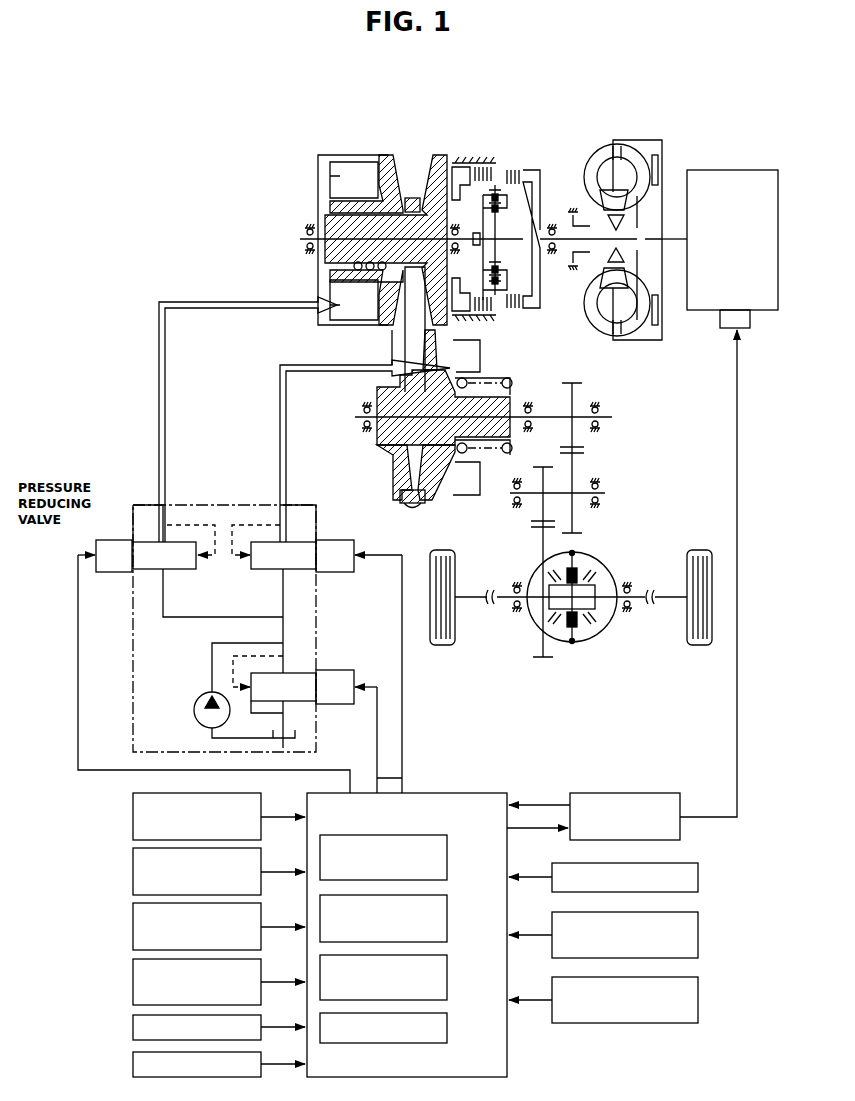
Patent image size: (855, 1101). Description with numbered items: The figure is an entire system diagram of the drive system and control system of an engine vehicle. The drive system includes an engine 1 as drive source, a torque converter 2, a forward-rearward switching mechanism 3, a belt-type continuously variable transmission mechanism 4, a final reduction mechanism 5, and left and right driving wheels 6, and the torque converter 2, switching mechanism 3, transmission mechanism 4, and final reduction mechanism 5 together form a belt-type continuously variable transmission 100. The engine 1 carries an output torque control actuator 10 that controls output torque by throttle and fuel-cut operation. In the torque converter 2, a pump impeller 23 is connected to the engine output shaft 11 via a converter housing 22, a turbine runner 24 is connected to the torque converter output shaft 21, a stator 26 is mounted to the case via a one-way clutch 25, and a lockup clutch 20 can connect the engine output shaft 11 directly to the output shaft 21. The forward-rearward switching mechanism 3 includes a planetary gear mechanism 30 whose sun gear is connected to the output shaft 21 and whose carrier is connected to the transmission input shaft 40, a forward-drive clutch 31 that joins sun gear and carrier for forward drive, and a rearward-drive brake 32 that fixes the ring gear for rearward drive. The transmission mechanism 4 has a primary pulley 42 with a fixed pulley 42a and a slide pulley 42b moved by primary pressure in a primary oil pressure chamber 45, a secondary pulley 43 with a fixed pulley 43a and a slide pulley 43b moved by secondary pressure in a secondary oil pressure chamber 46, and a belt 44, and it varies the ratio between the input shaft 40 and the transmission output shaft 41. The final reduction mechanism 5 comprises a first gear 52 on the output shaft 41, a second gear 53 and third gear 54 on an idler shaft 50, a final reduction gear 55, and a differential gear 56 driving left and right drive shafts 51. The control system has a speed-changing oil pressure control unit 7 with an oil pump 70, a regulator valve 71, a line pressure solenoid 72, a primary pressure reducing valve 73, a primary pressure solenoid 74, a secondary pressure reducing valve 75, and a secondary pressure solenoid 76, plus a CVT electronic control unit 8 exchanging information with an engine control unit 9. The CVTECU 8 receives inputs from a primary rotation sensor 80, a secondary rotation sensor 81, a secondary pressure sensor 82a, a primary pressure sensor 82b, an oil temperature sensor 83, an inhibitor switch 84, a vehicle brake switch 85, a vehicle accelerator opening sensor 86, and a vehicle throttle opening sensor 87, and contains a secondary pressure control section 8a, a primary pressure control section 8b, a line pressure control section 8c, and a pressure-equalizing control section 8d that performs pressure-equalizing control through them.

The engine 1 is at (737, 170).
The torque converter 2 is at (628, 227).
The forward-rearward switching mechanism 3 is at (496, 226).
The belt-type continuously variable transmission mechanism 4 is at (364, 214).
The final reduction mechanism 5 is at (571, 530).
The driving wheels 6 is at (442, 646).
The speed-changing oil pressure control unit 7 is at (240, 616).
The CVT electronic control unit 8 is at (407, 914).
The engine control unit 9 is at (626, 793).
The output torque control actuator 10 is at (752, 328).
The engine output shaft 11 is at (670, 250).
The lockup clutch 20 is at (662, 172).
The torque converter output shaft 21 is at (565, 255).
The converter housing 22 is at (647, 140).
The pump impeller 23 is at (596, 152).
The turbine runner 24 is at (628, 338).
The one-way clutch 25 is at (592, 214).
The stator 26 is at (615, 186).
The planetary gear mechanism 30 is at (500, 300).
The forward-drive clutch 31 is at (521, 170).
The rearward-drive brake 32 is at (478, 162).
The transmission input shaft 40 is at (330, 217).
The transmission output shaft 41 is at (541, 413).
The primary pulley 42 is at (313, 178).
The fixed pulley 42a is at (438, 153).
The slide pulley 42b is at (394, 153).
The secondary pulley 43 is at (466, 436).
The fixed pulley 43a is at (395, 482).
The slide pulley 43b is at (418, 505).
The belt 44 is at (396, 350).
The primary oil pressure chamber 45 is at (368, 148).
The secondary oil pressure chamber 46 is at (457, 498).
The idler shaft 50 is at (580, 500).
The drive shafts 51 is at (478, 601).
The first gear 52 is at (578, 392).
The second gear 53 is at (574, 470).
The third gear 54 is at (540, 484).
The final reduction gear 55 is at (542, 553).
The differential gear 56 is at (606, 566).
The oil pump 70 is at (194, 710).
The regulator valve 71 is at (300, 673).
The line pressure solenoid 72 is at (338, 704).
The primary pressure reducing valve 73 is at (152, 542).
The primary pressure solenoid 74 is at (112, 572).
The secondary pressure reducing valve 75 is at (300, 542).
The secondary pressure solenoid 76 is at (338, 572).
The primary rotation sensor 80 is at (133, 817).
The secondary rotation sensor 81 is at (133, 872).
The secondary pressure sensor 82a is at (133, 927).
The primary pressure sensor 82b is at (133, 982).
The oil temperature sensor 83 is at (133, 1027).
The inhibitor switch 84 is at (133, 1064).
The vehicle brake switch 85 is at (698, 877).
The vehicle accelerator opening sensor 86 is at (698, 935).
The vehicle throttle opening sensor 87 is at (698, 1000).
The secondary pressure control section 8a is at (450, 858).
The primary pressure control section 8b is at (450, 916).
The line pressure control section 8c is at (450, 976).
The pressure-equalizing control section 8d is at (450, 1028).
The belt-type continuously variable transmission 100 is at (656, 396).